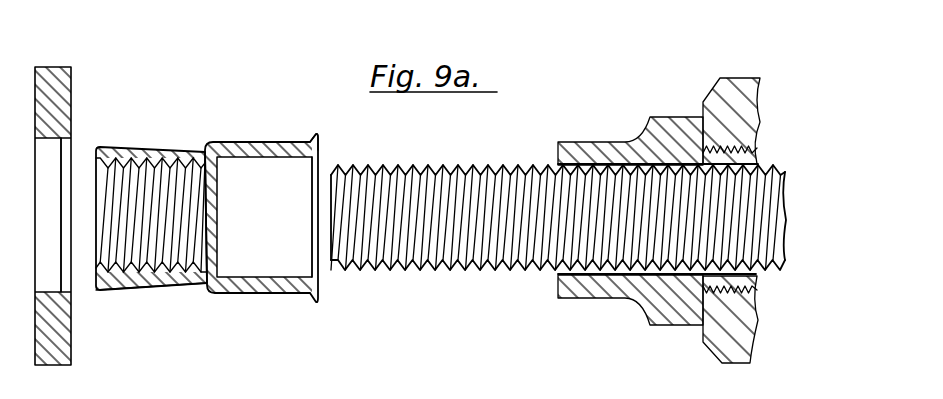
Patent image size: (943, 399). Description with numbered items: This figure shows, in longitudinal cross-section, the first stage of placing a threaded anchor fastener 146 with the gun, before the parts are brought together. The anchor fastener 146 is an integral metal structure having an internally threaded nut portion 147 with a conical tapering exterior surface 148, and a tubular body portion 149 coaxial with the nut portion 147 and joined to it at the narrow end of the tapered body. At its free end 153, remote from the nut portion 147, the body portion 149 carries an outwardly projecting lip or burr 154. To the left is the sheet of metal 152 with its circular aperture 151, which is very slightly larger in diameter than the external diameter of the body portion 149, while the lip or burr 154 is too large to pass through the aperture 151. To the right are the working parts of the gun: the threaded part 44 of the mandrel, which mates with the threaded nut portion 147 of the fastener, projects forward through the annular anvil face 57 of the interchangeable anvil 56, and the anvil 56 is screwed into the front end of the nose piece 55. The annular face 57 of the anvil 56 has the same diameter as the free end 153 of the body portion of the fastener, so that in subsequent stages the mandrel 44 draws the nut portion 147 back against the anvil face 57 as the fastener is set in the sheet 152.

The threaded part of the mandrel 44 is at (389, 170).
The nose piece 55 is at (718, 100).
The anvil 56 is at (587, 147).
The annular anvil face 57 is at (560, 287).
The anchor fastener 146 is at (217, 132).
The nut portion 147 is at (176, 273).
The conical tapering exterior surface 148 is at (158, 148).
The tubular body portion 149 is at (282, 284).
The circular aperture 151 is at (66, 140).
The sheet of metal 152 is at (45, 70).
The free end of the body portion 153 is at (311, 160).
The lip or burr 154 is at (318, 142).